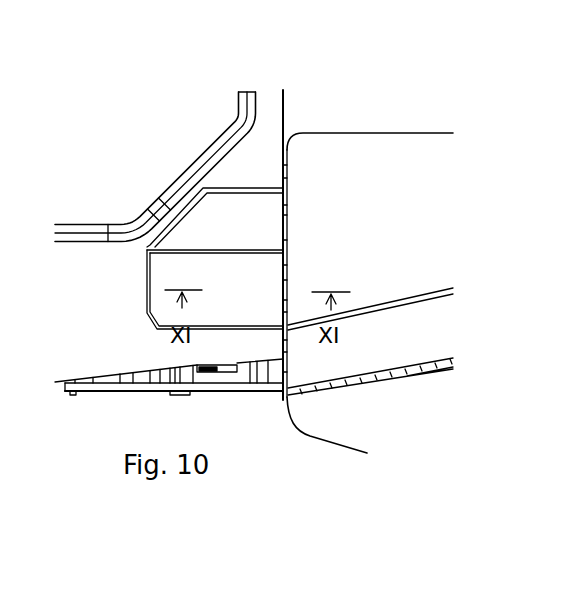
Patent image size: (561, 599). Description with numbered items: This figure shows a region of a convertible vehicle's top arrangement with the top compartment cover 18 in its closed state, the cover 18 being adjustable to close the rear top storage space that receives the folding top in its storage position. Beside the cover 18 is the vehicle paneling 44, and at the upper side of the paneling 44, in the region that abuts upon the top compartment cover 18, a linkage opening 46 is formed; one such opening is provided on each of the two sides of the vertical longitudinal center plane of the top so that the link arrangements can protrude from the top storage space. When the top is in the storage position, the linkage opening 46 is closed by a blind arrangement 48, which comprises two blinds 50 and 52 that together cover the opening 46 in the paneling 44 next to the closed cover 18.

The top compartment cover 18 is at (413, 195).
The vehicle paneling 44 is at (100, 350).
The linkage opening 46 is at (152, 218).
The blind arrangement 48 is at (200, 222).
The blind 50 is at (243, 210).
The blind 52 is at (224, 317).